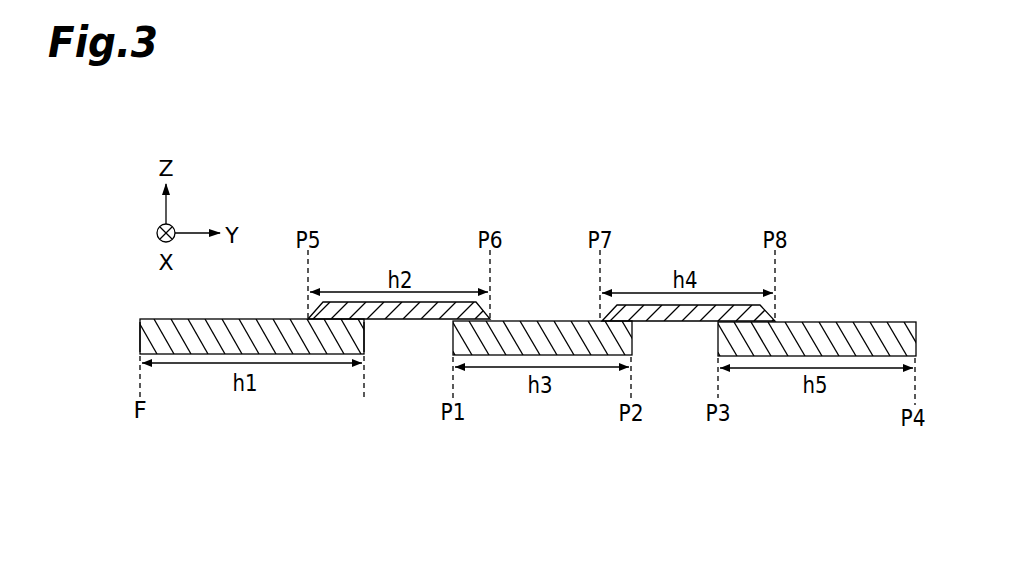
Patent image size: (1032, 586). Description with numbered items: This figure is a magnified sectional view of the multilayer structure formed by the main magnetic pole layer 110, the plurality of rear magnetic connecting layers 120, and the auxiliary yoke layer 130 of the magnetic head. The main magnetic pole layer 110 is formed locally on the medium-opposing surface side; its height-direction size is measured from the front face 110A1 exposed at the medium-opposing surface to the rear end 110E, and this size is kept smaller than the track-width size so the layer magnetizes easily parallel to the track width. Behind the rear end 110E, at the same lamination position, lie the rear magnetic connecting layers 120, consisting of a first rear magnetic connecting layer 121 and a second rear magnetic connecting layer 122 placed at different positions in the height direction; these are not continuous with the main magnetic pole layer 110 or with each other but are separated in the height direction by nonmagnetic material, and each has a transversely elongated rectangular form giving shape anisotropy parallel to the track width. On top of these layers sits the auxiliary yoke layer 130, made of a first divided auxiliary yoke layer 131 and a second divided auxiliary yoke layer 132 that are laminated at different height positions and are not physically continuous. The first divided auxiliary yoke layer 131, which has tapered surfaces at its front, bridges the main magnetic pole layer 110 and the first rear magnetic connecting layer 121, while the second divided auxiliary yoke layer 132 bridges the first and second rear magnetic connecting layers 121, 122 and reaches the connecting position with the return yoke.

The main magnetic pole layer 110 is at (316, 340).
The front face 110A1 is at (140, 341).
The rear end 110E is at (366, 333).
The rear magnetic connecting layers 120 is at (679, 415).
The first rear magnetic connecting layer 121 is at (583, 347).
The second rear magnetic connecting layer 122 is at (812, 390).
The auxiliary yoke layer 130 is at (541, 242).
The first divided auxiliary yoke layer 131 is at (437, 302).
The second divided auxiliary yoke layer 132 is at (690, 265).